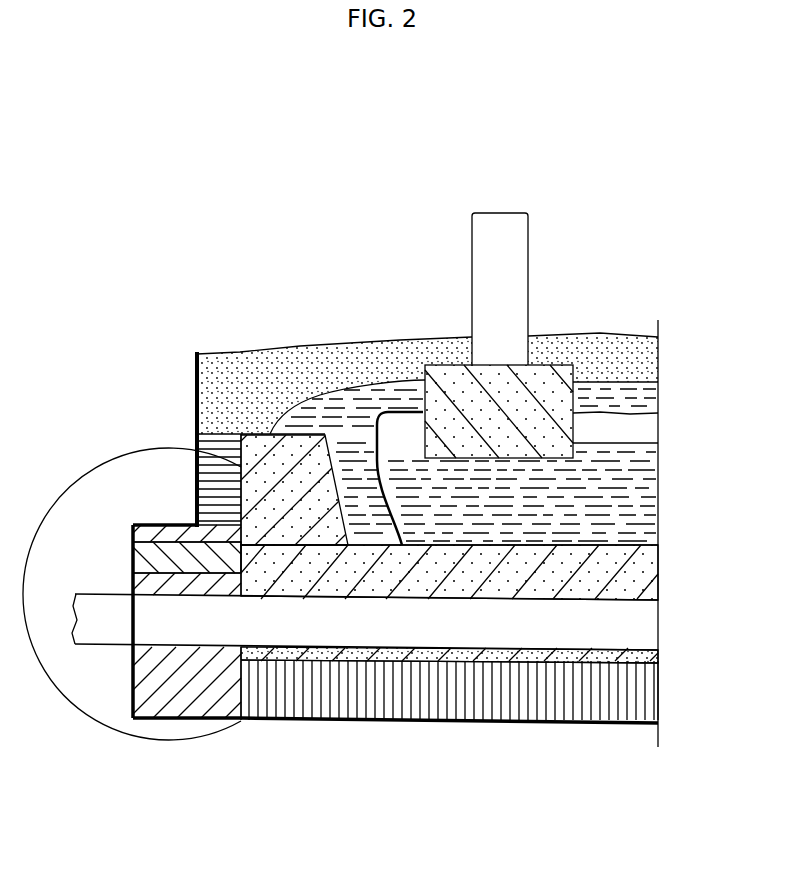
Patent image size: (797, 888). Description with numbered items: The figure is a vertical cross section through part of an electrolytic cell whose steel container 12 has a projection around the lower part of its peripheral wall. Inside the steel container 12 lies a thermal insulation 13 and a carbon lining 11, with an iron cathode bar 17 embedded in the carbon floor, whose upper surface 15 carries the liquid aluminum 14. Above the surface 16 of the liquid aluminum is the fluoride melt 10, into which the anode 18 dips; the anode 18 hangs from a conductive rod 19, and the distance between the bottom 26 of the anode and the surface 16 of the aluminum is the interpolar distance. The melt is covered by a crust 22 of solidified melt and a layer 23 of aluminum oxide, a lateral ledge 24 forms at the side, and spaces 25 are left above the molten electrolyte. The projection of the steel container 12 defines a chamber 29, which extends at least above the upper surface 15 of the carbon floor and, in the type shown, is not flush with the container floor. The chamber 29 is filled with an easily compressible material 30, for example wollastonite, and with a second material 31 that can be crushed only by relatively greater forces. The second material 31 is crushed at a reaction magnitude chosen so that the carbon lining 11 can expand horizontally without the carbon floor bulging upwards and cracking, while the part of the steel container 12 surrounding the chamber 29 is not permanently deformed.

The fluoride melt 10 is at (635, 488).
The carbon lining 11 is at (627, 585).
The steel container 12 is at (197, 360).
The thermal insulation 13 is at (210, 473).
The liquid aluminum 14 is at (623, 537).
The upper surface of the carbon floor 15 is at (450, 546).
The surface of the liquid aluminum 16 is at (600, 507).
The iron cathode bar 17 is at (588, 632).
The anode 18 is at (515, 372).
The conductive rod 19 is at (505, 257).
The crust of solidified melt 22 is at (637, 400).
The layer of aluminum oxide 23 is at (303, 360).
The lateral ledge 24 is at (352, 467).
The spaces above the molten electrolyte 25 is at (393, 432).
The bottom of the anode 26 is at (542, 463).
The chamber 29 is at (195, 745).
The easily compressible material 30 is at (175, 677).
The second material 31 is at (188, 558).